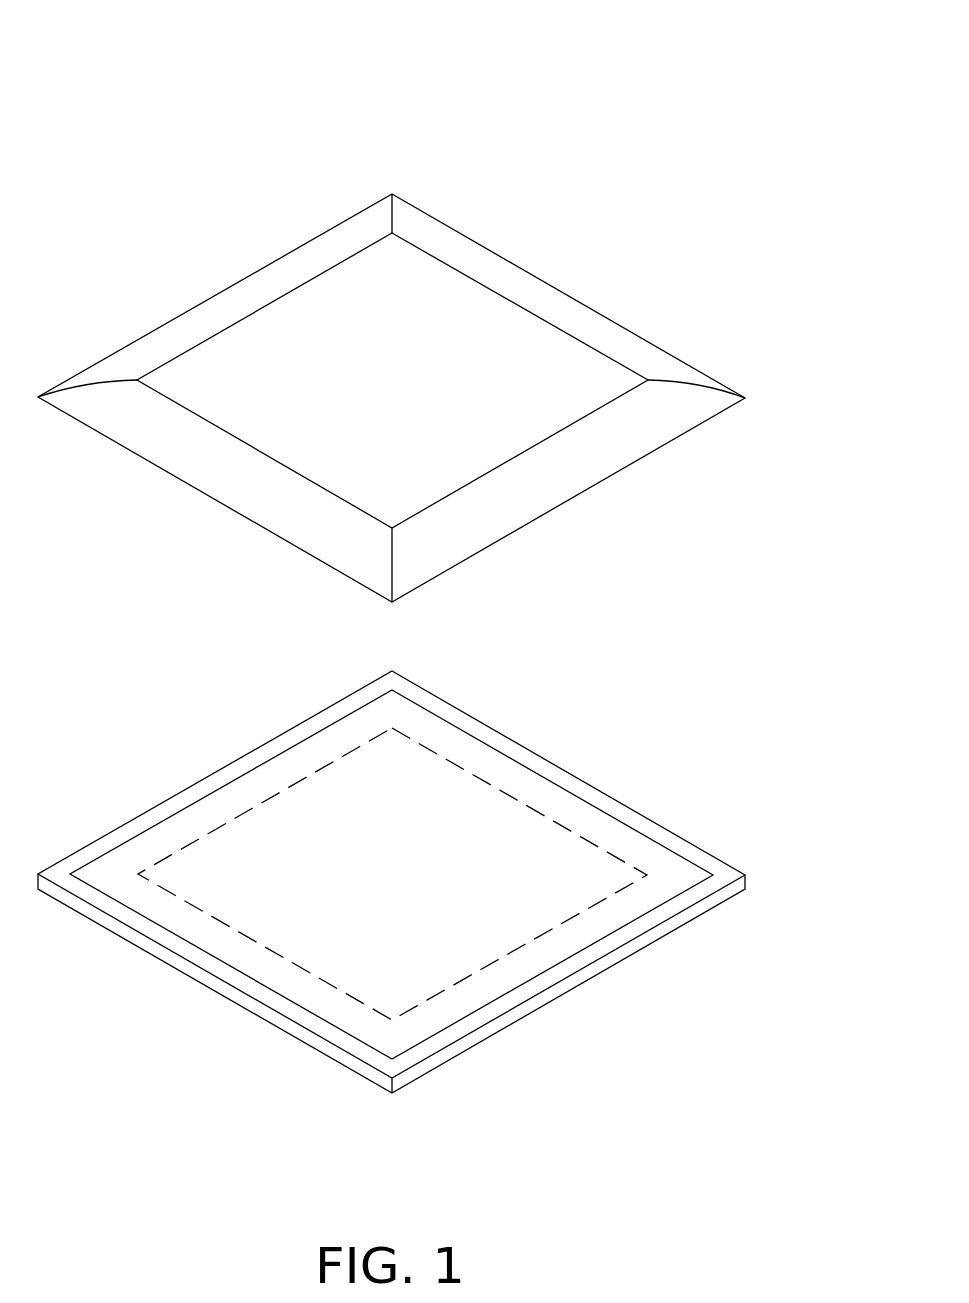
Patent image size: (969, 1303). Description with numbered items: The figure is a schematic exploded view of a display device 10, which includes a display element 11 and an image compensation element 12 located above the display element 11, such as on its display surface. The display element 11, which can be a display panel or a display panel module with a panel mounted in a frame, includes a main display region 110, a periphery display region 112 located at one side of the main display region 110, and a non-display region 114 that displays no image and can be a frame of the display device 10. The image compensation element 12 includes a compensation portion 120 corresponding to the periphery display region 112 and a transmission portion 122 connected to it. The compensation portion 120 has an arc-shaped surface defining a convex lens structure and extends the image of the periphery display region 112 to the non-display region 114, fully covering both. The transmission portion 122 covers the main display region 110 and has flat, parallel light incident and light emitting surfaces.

The display device 10 is at (335, 57).
The image compensation element 12 is at (489, 230).
The compensation portion 120 is at (598, 460).
The transmission portion 122 is at (518, 340).
The display element 11 is at (558, 745).
The non-display region 114 is at (658, 835).
The periphery display region 112 is at (607, 923).
The main display region 110 is at (430, 951).